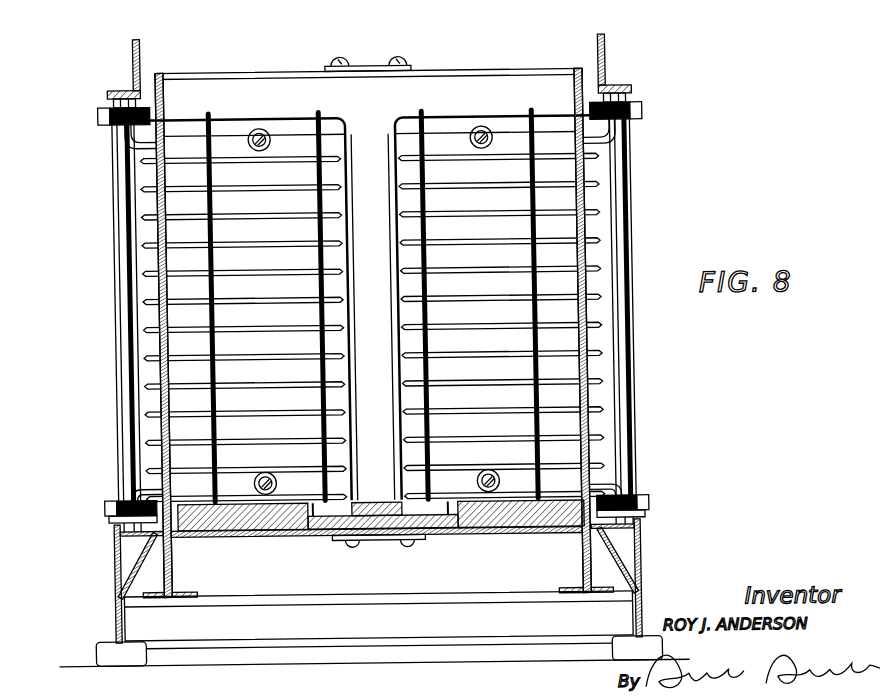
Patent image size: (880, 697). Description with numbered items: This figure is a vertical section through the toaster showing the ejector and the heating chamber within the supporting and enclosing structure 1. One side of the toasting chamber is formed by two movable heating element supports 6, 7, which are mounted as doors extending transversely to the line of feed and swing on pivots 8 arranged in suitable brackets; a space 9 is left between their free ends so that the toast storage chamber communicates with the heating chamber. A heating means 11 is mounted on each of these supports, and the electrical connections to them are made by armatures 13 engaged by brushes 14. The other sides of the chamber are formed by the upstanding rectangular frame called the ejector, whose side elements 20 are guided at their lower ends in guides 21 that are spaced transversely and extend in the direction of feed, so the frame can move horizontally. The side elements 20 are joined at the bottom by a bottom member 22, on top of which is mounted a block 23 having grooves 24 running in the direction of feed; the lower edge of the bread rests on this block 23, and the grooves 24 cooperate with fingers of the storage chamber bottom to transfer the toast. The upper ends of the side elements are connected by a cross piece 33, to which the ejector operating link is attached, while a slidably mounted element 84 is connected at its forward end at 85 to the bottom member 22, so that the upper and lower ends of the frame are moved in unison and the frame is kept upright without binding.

The supporting and enclosing structure 1 is at (611, 53).
The movable heating element support 6 is at (479, 119).
The movable heating element support 7 is at (338, 116).
The pivot 8 is at (125, 87).
The space 9 is at (372, 245).
The heating means 11 is at (186, 306).
The armature 13 is at (109, 118).
The brush 14 is at (101, 112).
The side element 20 is at (154, 230).
The guide 21 is at (193, 591).
The bottom member 22 is at (277, 526).
The block 23 is at (507, 519).
The groove 24 is at (310, 516).
The cross piece 33 is at (258, 69).
The slidably mounted element 84 is at (369, 540).
The connection 85 is at (402, 544).